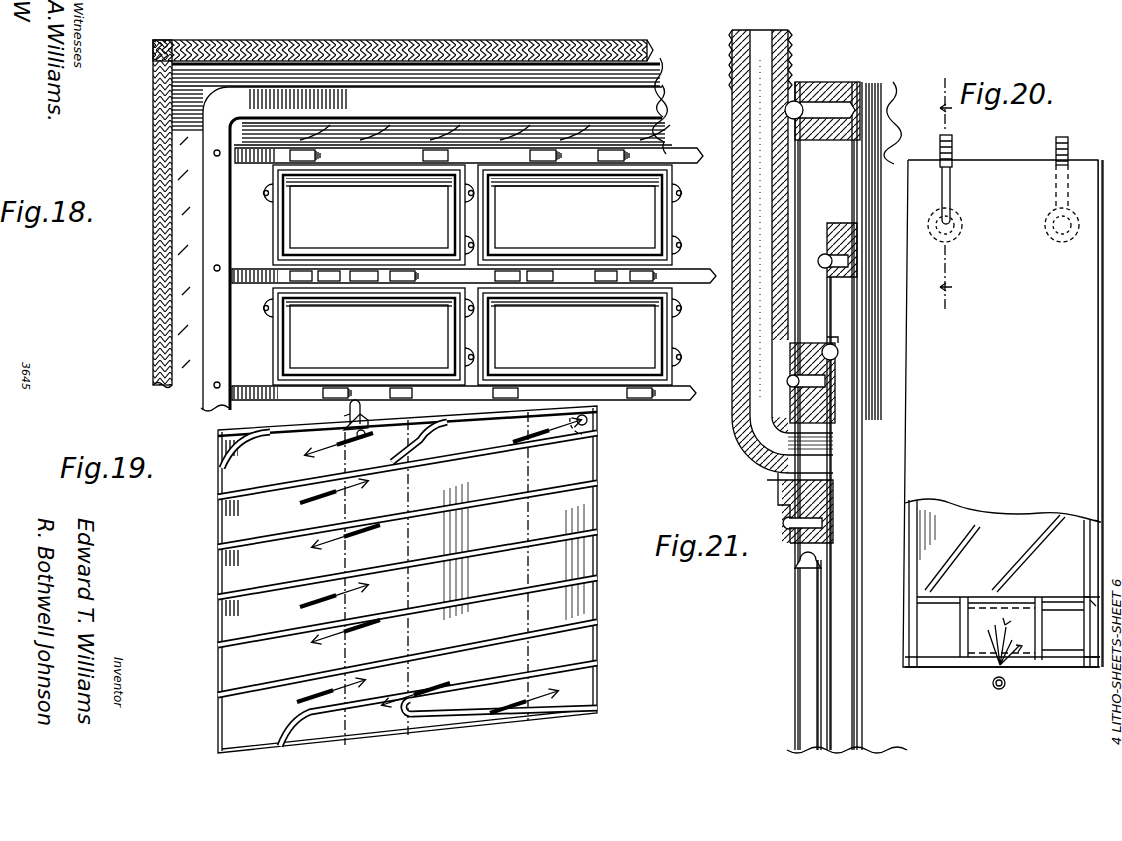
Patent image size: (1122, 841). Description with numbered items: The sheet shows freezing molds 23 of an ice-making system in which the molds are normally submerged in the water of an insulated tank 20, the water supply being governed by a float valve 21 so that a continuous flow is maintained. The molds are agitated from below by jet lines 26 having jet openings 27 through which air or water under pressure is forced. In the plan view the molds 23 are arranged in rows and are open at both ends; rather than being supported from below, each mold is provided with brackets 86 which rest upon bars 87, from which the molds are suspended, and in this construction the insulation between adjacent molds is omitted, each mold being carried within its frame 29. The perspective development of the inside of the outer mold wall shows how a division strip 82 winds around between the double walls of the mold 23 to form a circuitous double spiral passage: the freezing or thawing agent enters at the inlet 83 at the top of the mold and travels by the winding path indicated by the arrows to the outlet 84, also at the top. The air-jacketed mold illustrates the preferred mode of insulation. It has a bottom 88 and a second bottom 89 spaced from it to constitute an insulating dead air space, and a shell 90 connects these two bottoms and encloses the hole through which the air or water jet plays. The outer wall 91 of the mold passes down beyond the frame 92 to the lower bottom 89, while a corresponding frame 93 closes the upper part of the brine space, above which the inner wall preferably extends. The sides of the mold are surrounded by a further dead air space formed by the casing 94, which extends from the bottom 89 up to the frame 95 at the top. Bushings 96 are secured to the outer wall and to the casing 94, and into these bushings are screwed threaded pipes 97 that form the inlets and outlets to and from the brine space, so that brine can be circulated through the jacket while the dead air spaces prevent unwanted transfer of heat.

In FIG. 18, the insulated tank 20 is at (513, 50).
In FIG. 20, the float valve 21 is at (945, 197).
In FIG. 18, the freezing mold 23 is at (472, 277).
In FIG. 19, the freezing mold 23 is at (420, 579).
In FIG. 20, the jet line 26 is at (1000, 690).
In FIG. 20, the jet opening 27 is at (1004, 683).
In FIG. 18, the panel frame 29 is at (273, 243).
In FIG. 19, the division strip 82 is at (438, 486).
In FIG. 19, the inlet 83 is at (364, 436).
In FIG. 19, the outlet 84 is at (589, 423).
In FIG. 18, the bracket 86 is at (602, 155).
In FIG. 18, the bar 87 is at (492, 160).
In FIG. 20, the bottom 88 is at (1065, 597).
In FIG. 20, the bottom 89 is at (1069, 667).
In FIG. 20, the shell 90 is at (1020, 633).
In FIG. 21, the outer wall 91 is at (820, 733).
In FIG. 20, the outer wall 91 is at (1083, 631).
In FIG. 20, the frame 92 is at (1085, 600).
In FIG. 21, the frame 93 is at (833, 232).
In FIG. 21, the casing 94 is at (790, 676).
In FIG. 21, the frame 95 is at (840, 87).
In FIG. 21, the bushing 96 is at (790, 412).
In FIG. 21, the screw-threaded pipe 97 is at (735, 341).
In FIG. 20, the screw-threaded pipe 97 is at (950, 178).